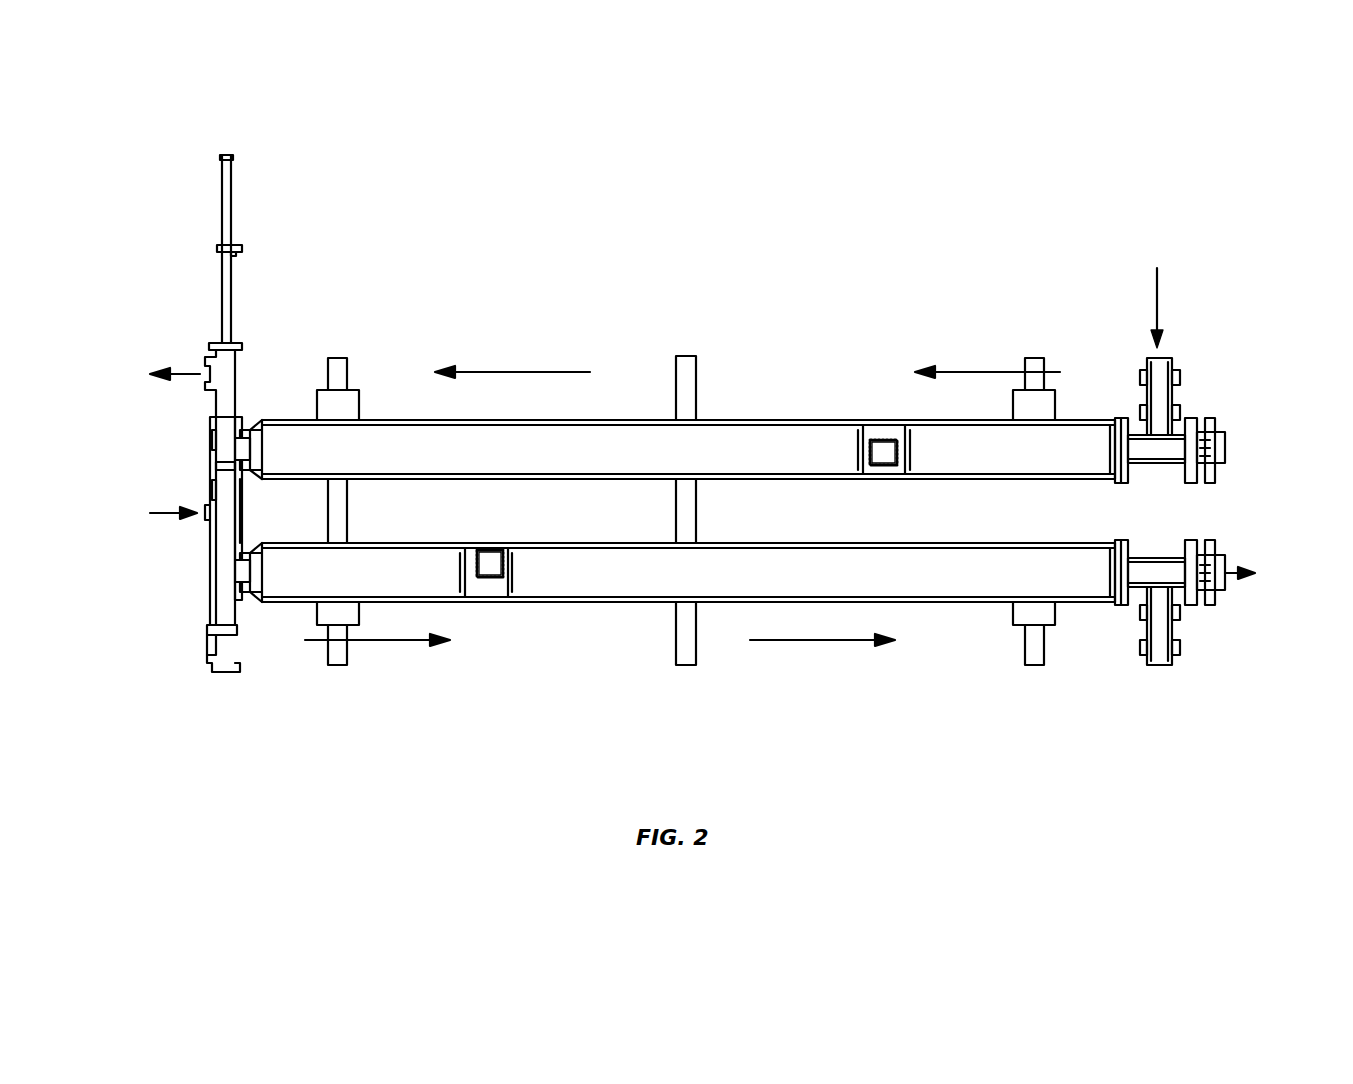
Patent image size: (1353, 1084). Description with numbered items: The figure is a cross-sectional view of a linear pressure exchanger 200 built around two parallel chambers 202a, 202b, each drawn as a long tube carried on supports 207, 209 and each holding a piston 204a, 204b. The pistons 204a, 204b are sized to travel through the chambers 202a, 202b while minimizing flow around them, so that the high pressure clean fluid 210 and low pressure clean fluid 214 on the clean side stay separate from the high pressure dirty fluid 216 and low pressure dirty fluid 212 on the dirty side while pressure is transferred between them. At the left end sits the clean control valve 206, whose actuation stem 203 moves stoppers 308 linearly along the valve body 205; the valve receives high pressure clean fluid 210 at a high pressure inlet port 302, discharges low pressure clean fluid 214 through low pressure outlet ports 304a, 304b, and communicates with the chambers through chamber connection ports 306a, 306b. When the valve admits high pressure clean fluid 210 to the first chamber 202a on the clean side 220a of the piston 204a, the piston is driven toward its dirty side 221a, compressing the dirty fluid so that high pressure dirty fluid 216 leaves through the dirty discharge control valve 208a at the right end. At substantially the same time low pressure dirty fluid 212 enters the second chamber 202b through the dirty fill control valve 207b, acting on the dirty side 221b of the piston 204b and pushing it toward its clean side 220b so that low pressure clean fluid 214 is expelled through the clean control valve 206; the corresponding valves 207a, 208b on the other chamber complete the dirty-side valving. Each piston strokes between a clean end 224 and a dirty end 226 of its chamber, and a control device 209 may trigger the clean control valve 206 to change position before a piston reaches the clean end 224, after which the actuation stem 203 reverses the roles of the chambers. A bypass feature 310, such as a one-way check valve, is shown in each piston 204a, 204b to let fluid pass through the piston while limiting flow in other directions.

The linear pressure exchanger 200 is at (1040, 250).
The first chamber 202a is at (652, 604).
The second chamber 202b is at (618, 422).
The actuation stem 203 is at (230, 262).
The piston 204a is at (489, 580).
The piston 204b is at (883, 440).
The body 205 is at (215, 442).
The clean control valve 206 is at (212, 490).
The conduit support 207 is at (352, 395).
The dirty fill control valve 207a is at (1160, 650).
The dirty fill control valve 207b is at (1165, 395).
The dirty discharge control valve 208a is at (1212, 592).
The dirty discharge control valve 208b is at (1215, 448).
The control device 209 is at (1045, 398).
The high pressure clean fluid 210 is at (380, 580).
The low pressure dirty fluid 212 is at (997, 445).
The low pressure clean fluid 214 is at (383, 445).
The high pressure dirty fluid 216 is at (826, 578).
The clean side 220a is at (464, 582).
The clean side 220b is at (857, 450).
The dirty side 221a is at (512, 578).
The dirty side 221b is at (908, 455).
The clean end 224 is at (270, 425).
The dirty end 226 is at (1125, 448).
The high pressure inlet port 302 is at (205, 513).
The low pressure outlet port 304a is at (213, 650).
The low pressure outlet port 304b is at (210, 362).
The chamber connection port 306a is at (255, 600).
The chamber connection port 306b is at (266, 418).
The stopper 308 is at (217, 473).
The bypass feature 310 is at (884, 458).